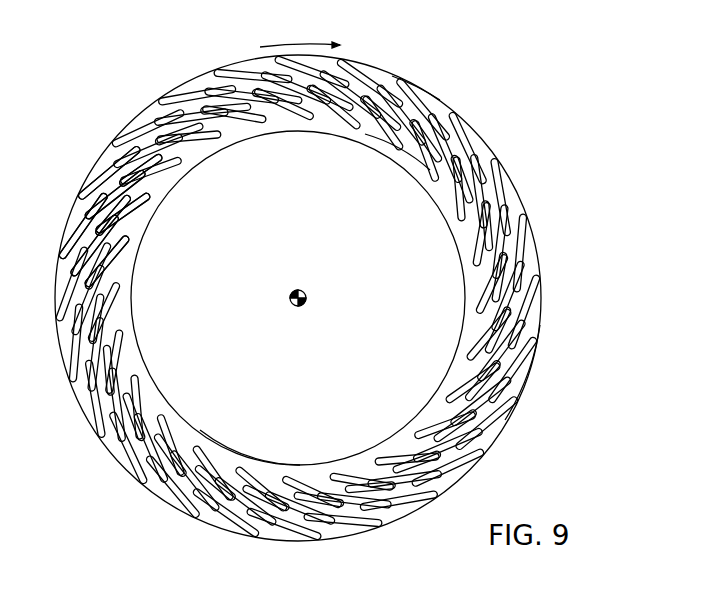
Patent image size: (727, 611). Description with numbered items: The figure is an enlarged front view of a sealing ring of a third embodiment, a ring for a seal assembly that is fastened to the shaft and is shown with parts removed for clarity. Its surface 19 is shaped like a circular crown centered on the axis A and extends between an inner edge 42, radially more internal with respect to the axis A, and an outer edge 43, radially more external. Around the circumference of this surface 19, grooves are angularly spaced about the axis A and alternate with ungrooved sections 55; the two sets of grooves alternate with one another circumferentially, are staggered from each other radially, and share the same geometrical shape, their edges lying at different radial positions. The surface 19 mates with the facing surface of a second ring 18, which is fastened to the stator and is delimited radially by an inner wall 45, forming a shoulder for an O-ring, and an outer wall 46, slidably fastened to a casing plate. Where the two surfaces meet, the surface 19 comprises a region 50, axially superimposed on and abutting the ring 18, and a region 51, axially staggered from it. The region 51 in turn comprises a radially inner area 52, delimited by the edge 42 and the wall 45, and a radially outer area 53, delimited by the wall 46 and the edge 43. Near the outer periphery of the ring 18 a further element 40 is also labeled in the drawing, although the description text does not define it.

The ring 18 is at (525, 262).
The surface 19 is at (365, 134).
The outer edge region 40 is at (505, 393).
The edge 42 is at (255, 458).
The edge 43 is at (416, 82).
The wall 45 is at (410, 137).
The wall 46 is at (530, 300).
The region 50 is at (490, 185).
The region 51 is at (453, 119).
The radially inner area 52 is at (438, 170).
The radially outer area 53 is at (377, 66).
The ungrooved sections 55 is at (167, 477).
The axis A is at (290, 298).